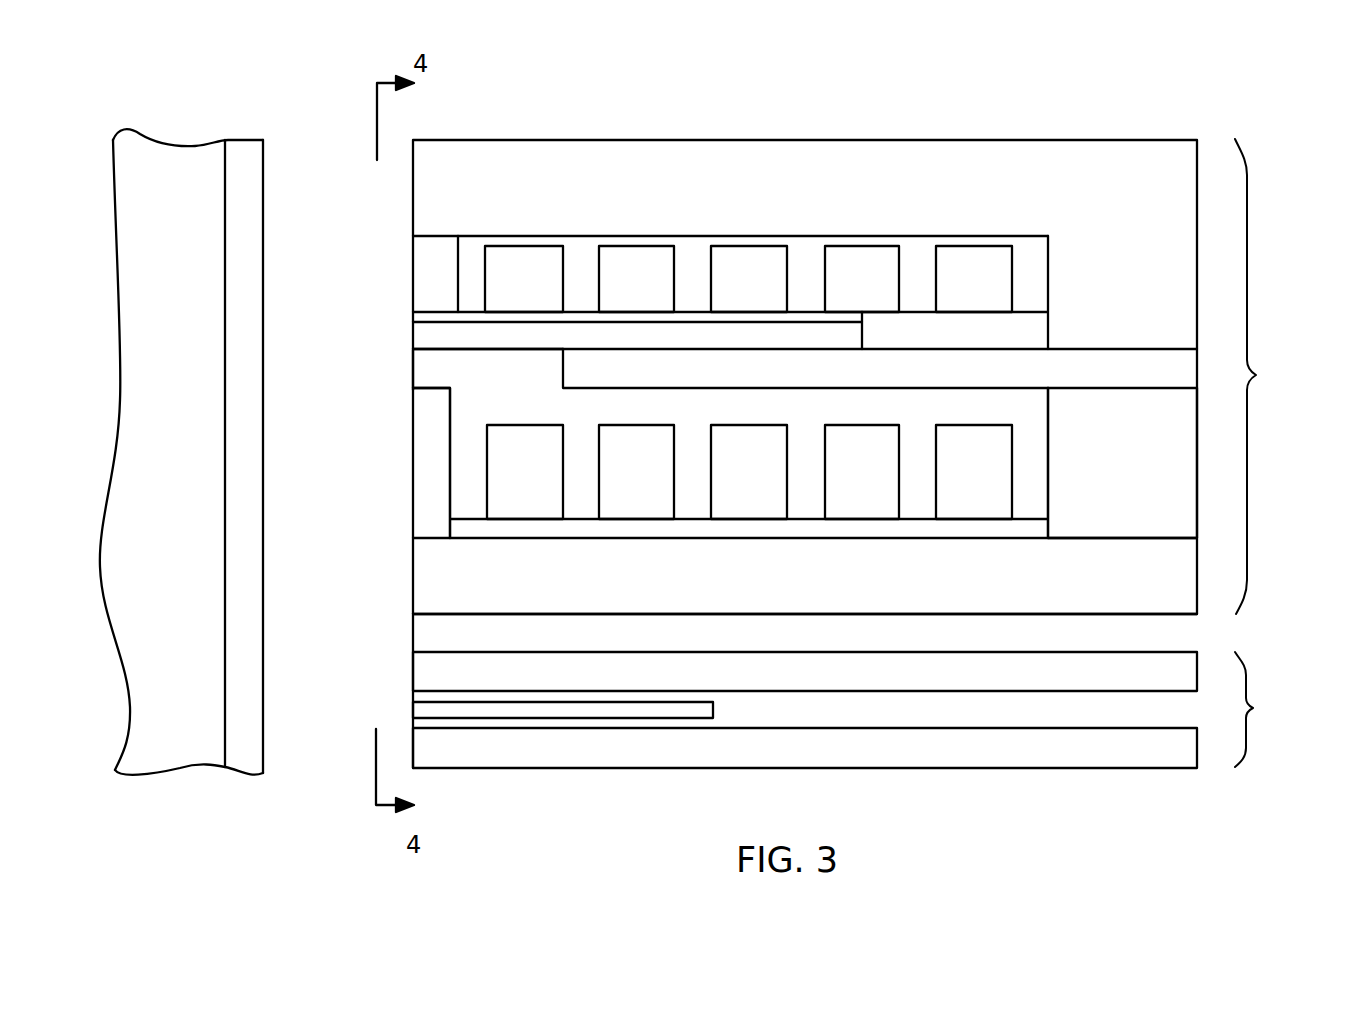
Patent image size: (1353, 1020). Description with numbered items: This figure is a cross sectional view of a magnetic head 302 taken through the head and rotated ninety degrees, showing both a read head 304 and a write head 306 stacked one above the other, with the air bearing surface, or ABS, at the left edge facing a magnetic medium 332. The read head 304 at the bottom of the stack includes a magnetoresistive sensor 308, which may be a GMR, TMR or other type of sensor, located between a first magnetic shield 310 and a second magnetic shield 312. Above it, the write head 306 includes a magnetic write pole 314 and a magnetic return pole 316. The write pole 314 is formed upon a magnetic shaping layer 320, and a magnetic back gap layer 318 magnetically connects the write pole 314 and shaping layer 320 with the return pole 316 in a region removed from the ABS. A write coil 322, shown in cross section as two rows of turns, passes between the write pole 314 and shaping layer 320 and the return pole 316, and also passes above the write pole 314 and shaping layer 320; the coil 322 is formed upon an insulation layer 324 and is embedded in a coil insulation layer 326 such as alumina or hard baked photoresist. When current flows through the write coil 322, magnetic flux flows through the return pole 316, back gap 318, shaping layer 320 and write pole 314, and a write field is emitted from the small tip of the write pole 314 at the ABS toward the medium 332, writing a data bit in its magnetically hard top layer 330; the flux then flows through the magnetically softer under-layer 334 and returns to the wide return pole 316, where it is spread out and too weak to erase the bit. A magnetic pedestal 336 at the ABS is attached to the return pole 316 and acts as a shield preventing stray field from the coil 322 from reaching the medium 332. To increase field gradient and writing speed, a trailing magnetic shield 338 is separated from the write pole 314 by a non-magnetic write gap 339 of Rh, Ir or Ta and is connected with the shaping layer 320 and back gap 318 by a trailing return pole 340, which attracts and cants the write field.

The magnetic head 302 is at (899, 140).
The read head 304 is at (1249, 667).
The write head 306 is at (1253, 165).
The magnetoresistive sensor 308 is at (693, 711).
The first magnetic shield 310 is at (817, 751).
The second magnetic shield 312 is at (818, 676).
The magnetic write pole 314 is at (414, 342).
The magnetic return pole 316 is at (826, 576).
The magnetic back gap layer 318 is at (1134, 455).
The magnetic shaping layer 320 is at (928, 370).
The write coil 322 is at (556, 278).
The insulation layer 324 is at (928, 333).
The coil insulation layer 326 is at (803, 254).
The magnetically hard top layer 330 is at (253, 160).
The magnetic medium 332 is at (170, 141).
The magnetically softer under-layer 334 is at (200, 360).
The magnetic pedestal 336 is at (421, 432).
The trailing magnetic shield 338 is at (441, 275).
The non-magnetic write gap 339 is at (414, 316).
The trailing return pole 340 is at (773, 172).
The air bearing surface ABS is at (414, 368).